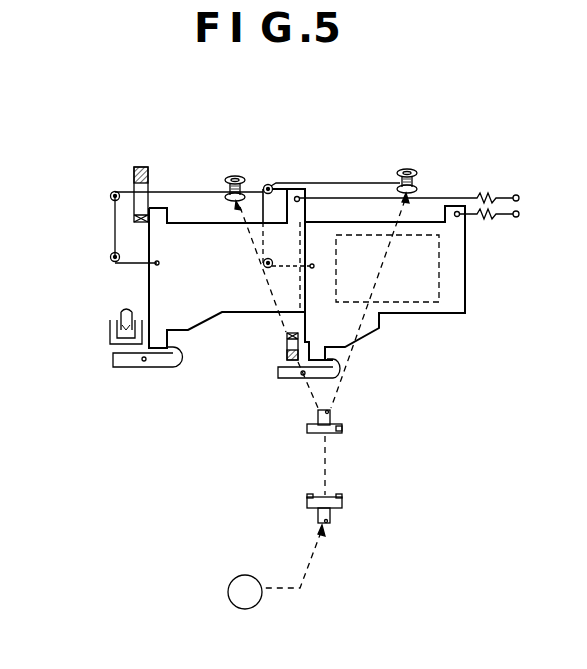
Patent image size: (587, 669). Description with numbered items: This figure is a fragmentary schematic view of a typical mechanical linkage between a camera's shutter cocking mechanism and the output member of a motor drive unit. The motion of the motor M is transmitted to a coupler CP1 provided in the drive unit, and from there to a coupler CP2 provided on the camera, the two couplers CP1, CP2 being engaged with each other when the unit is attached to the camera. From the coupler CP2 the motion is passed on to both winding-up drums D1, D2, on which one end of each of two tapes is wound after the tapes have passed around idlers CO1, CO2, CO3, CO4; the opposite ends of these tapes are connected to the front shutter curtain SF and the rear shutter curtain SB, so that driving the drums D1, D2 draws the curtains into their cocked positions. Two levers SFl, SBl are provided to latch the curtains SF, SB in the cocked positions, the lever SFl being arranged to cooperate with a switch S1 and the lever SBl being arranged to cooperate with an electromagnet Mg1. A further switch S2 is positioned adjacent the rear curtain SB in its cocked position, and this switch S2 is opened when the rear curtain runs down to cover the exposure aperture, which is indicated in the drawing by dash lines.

The rear shutter curtain SB is at (202, 310).
The switch S2 is at (150, 201).
The idler CO1 is at (110, 198).
The idler CO2 is at (110, 258).
The idler CO3 is at (272, 185).
The idler CO4 is at (264, 268).
The winding-up drum D1 is at (236, 176).
The winding-up drum D2 is at (412, 168).
The front shutter curtain SF is at (452, 308).
The lever SBl is at (122, 364).
The lever SFl is at (285, 380).
The switch S1 is at (287, 348).
The electromagnet Mg1 is at (110, 333).
The coupler CP2 is at (343, 428).
The coupler CP1 is at (343, 503).
The motor M is at (245, 592).